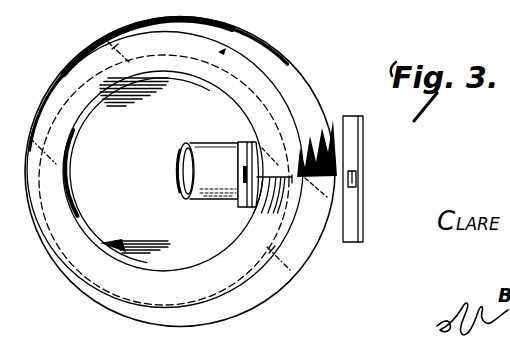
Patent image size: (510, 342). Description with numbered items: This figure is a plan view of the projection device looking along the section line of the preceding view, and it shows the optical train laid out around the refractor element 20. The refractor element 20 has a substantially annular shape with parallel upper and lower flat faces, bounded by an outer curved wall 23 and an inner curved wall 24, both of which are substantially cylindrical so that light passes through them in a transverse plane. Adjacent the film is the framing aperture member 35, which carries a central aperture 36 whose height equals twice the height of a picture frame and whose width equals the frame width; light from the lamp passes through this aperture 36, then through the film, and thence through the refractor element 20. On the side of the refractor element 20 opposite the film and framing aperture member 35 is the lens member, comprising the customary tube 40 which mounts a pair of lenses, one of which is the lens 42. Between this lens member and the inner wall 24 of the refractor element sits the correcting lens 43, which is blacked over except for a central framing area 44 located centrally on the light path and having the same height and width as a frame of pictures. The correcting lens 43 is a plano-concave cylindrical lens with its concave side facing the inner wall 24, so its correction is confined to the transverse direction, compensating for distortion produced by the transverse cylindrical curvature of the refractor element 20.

The refractor element 20 is at (286, 48).
The outer curved wall 23 is at (300, 83).
The inner curved wall 24 is at (197, 277).
The framing aperture member 35 is at (363, 137).
The central aperture 36 is at (356, 184).
The tube 40 is at (193, 143).
The lens 42 is at (179, 163).
The correcting lens 43 is at (247, 143).
The central framing area 44 is at (241, 204).